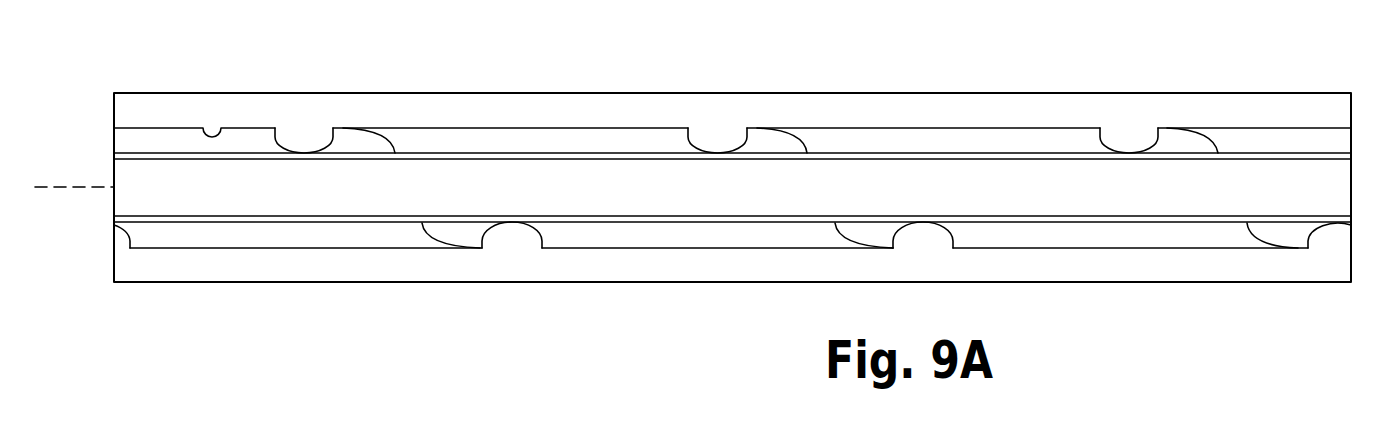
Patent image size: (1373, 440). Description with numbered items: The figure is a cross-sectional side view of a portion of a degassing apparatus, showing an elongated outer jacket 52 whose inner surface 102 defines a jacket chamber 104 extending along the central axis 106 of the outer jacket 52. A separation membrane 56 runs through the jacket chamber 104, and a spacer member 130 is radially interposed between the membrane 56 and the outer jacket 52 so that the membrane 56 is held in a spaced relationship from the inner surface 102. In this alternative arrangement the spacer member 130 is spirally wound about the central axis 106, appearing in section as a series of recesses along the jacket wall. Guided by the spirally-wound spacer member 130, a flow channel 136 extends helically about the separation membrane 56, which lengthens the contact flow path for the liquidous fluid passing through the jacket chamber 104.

The outer jacket 52 is at (577, 99).
The membrane 56 is at (334, 220).
The inner surface 102 is at (204, 132).
The jacket chamber 104 is at (185, 235).
The central axis 106 is at (80, 187).
The spacer member 130 is at (303, 138).
The flow channel 136 is at (663, 233).